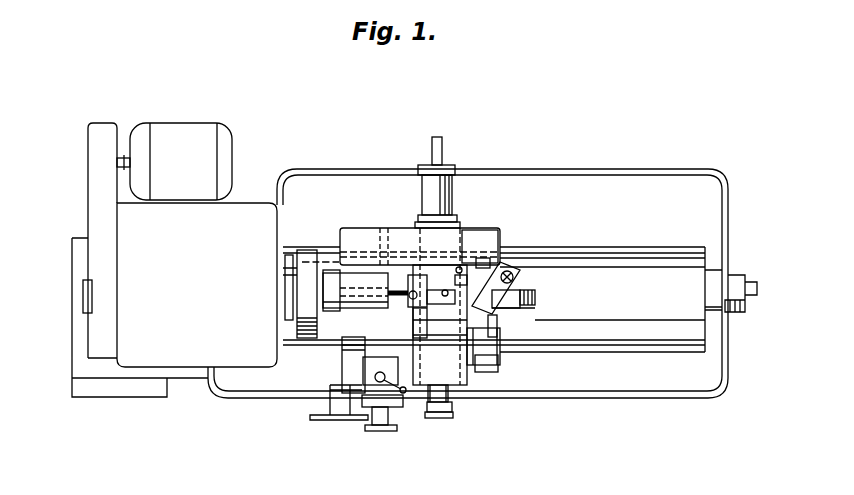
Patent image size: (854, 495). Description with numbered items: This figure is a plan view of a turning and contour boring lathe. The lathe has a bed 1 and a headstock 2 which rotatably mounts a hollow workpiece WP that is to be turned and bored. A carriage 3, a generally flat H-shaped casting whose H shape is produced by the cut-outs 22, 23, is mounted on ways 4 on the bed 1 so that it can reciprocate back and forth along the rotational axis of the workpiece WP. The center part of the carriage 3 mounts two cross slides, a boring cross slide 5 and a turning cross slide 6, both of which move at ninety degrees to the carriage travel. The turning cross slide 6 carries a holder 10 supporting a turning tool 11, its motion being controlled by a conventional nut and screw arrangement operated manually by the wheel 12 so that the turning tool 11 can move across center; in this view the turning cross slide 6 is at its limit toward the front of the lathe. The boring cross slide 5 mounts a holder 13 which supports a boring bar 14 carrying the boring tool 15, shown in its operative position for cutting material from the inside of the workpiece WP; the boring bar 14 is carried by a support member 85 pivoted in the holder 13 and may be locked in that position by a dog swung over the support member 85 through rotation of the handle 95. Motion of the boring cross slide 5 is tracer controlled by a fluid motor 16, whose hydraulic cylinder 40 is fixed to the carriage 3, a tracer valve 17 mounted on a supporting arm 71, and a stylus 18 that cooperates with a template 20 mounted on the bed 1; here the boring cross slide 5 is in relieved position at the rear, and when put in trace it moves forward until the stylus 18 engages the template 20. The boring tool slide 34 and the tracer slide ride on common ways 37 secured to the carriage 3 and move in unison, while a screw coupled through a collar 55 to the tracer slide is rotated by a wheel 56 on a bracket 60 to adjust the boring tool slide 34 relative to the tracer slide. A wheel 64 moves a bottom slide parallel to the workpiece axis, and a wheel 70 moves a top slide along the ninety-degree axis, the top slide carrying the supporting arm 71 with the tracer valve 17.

The bed 1 is at (578, 248).
The headstock 2 is at (203, 348).
The carriage 3 is at (482, 225).
The ways 4 is at (660, 364).
The boring cross slide 5 is at (457, 222).
The turning cross slide 6 is at (390, 224).
The holder 10 is at (365, 370).
The turning tool 11 is at (365, 348).
The wheel 12 is at (375, 433).
The holder 13 is at (420, 274).
The boring bar 14 is at (388, 227).
The boring tool 15 is at (362, 295).
The fluid motor 16 is at (450, 163).
The tracer valve 17 is at (518, 277).
The stylus 18 is at (518, 264).
The template 20 is at (537, 300).
The cut-out 22 is at (483, 265).
The cut-out 23 is at (337, 262).
The boring tool slide 34 is at (423, 302).
The ways 37 is at (493, 327).
The hydraulic cylinder 40 is at (422, 183).
The collar 55 is at (458, 375).
The wheel 56 is at (443, 418).
The bracket 60 is at (450, 395).
The wheel 64 is at (502, 357).
The wheel 70 is at (488, 372).
The supporting arm 71 is at (552, 300).
The support member 85 is at (467, 280).
The handle 95 is at (447, 343).
The workpiece WP is at (373, 278).